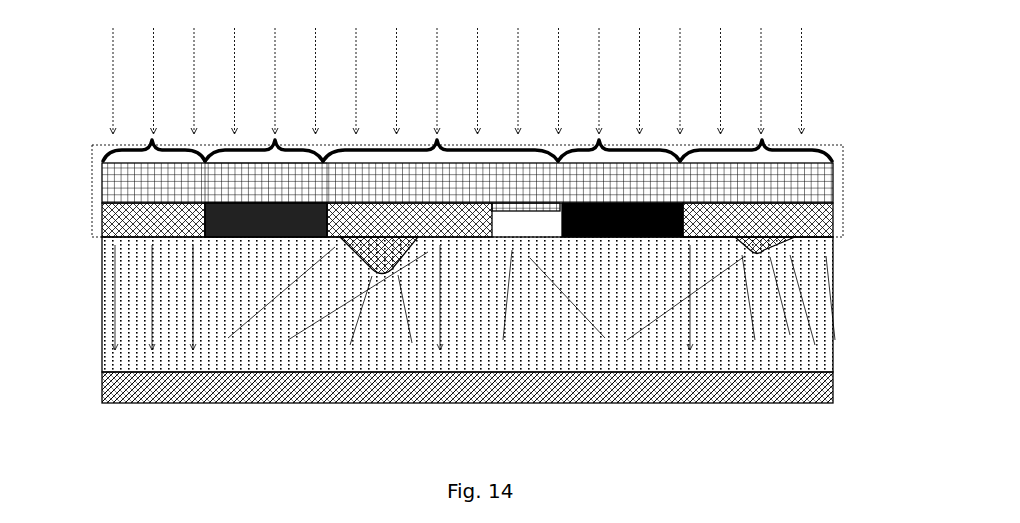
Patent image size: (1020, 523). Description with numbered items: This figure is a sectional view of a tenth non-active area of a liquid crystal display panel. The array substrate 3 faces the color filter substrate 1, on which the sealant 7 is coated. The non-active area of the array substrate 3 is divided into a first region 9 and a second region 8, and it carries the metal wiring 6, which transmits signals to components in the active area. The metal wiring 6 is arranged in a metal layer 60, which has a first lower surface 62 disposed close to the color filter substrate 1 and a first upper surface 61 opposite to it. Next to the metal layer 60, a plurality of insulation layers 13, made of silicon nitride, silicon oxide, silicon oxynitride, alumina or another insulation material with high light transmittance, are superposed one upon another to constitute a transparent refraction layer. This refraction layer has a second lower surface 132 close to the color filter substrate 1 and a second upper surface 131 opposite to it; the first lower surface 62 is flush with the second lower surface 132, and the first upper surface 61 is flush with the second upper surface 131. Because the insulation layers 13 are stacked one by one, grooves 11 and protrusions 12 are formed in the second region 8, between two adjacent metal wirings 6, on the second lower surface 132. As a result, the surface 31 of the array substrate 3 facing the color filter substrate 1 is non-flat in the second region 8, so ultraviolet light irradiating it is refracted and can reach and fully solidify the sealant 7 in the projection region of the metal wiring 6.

The color filter substrate 1 is at (467, 387).
The array substrate 3 is at (97, 240).
The metal wiring 6 is at (444, 220).
The sealant 7 is at (468, 304).
The second region 8 is at (467, 132).
The first region 9 is at (442, 132).
The groove 11 is at (513, 209).
The protrusion 12 is at (381, 274).
The insulation layer 13 is at (809, 222).
The surface of the array substrate 31 is at (819, 238).
The metal layer 60 is at (204, 222).
The first upper surface 61 is at (238, 202).
The first lower surface 62 is at (268, 240).
The second upper surface 131 is at (818, 201).
The second lower surface 132 is at (758, 256).